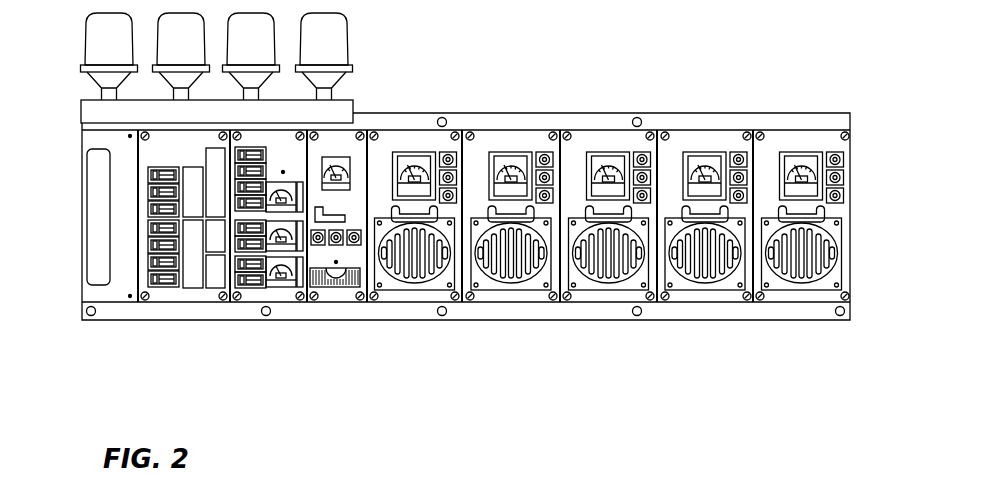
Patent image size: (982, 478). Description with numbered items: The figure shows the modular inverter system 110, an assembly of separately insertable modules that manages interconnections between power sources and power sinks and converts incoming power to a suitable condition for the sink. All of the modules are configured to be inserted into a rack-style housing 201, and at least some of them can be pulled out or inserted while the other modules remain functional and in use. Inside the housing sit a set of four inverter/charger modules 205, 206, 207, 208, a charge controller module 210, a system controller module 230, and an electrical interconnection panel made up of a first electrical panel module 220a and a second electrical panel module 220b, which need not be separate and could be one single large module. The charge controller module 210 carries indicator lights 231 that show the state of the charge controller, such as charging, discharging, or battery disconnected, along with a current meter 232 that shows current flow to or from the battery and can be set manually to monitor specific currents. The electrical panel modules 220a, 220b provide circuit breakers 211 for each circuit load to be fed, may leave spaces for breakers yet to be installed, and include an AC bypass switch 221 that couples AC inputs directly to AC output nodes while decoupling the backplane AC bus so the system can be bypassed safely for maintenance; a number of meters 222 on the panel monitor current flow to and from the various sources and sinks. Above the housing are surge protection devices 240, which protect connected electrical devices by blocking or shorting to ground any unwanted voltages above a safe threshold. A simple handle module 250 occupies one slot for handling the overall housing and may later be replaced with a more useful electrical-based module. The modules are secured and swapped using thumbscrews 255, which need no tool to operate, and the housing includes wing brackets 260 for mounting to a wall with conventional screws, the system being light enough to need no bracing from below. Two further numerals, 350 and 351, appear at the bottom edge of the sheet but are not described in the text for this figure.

The modular inverter system 110 is at (381, 402).
The rack-style housing 201 is at (537, 107).
The inverter/charger module 205 is at (797, 303).
The inverter/charger module 206 is at (710, 303).
The inverter/charger module 207 is at (610, 303).
The inverter/charger module 208 is at (510, 303).
The charge controller module 210 is at (422, 303).
The circuit breakers 211 is at (160, 294).
The electrical panel module 220a is at (130, 262).
The electrical panel module 220b is at (272, 265).
The AC bypass switch 221 is at (142, 187).
The meters 222 is at (282, 284).
The system controller module 230 is at (381, 234).
The indicator lights 231 is at (346, 228).
The current meter 232 is at (343, 155).
The surge protection devices 240 is at (355, 44).
The handle module 250 is at (100, 254).
The thumbscrews 255 is at (762, 128).
The wing brackets 260 is at (683, 118).
The component 350 is at (662, 477).
The component 351 is at (718, 477).